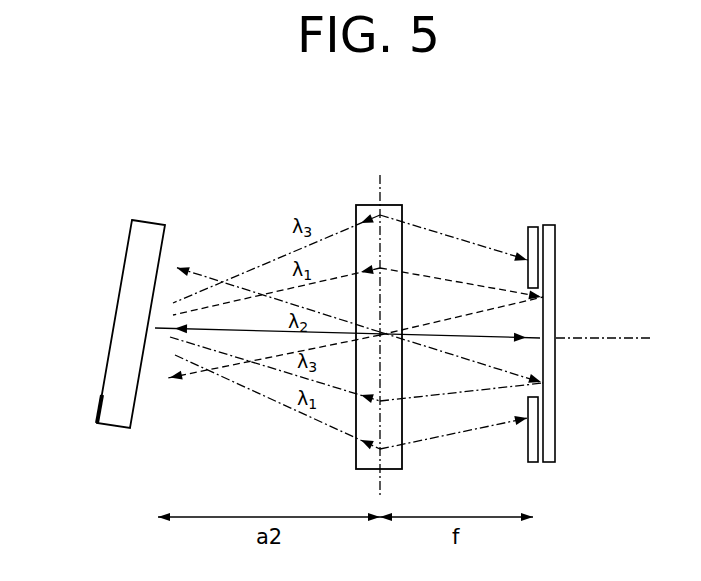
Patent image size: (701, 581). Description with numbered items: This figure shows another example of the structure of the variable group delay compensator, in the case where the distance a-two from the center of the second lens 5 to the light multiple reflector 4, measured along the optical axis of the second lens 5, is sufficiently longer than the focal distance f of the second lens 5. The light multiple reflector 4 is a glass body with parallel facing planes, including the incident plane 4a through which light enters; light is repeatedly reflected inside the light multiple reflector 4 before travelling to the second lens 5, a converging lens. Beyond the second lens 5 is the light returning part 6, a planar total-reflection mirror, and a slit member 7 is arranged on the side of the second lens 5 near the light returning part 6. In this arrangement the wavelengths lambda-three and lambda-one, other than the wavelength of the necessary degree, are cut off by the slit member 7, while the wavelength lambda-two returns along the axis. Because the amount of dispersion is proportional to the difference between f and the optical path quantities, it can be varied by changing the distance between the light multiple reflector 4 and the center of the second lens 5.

The light multiple reflector 4 is at (150, 223).
The incident plane 4a is at (100, 409).
The second lens 5 is at (390, 205).
The light returning part 6 is at (549, 462).
The slit member 7 is at (530, 227).